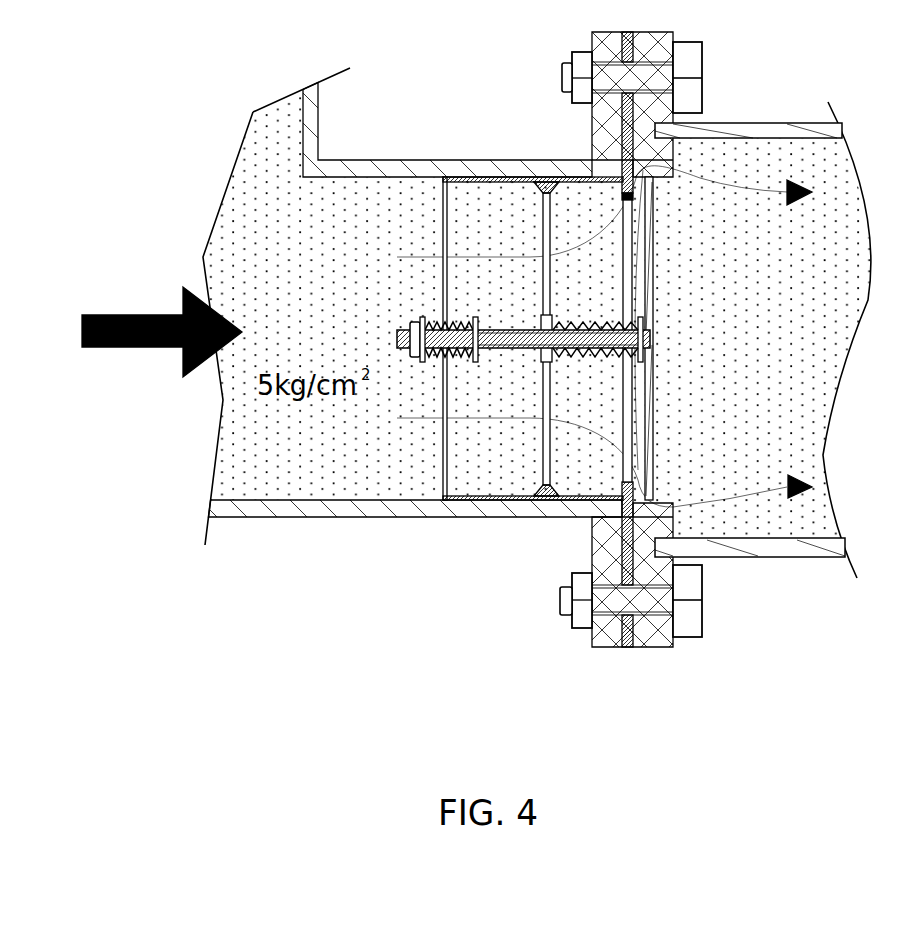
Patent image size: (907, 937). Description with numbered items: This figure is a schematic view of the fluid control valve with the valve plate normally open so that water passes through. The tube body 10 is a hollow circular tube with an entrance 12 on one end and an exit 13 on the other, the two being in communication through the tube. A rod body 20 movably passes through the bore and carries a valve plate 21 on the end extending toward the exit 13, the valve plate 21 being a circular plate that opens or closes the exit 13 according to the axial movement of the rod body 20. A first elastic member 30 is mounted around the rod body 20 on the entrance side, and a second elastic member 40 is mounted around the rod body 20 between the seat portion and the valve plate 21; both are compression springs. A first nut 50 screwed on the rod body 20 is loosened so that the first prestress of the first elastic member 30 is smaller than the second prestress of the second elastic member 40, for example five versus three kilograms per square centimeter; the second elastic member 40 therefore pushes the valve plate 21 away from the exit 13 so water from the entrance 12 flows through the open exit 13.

The tube body 10 is at (518, 500).
The entrance 12 is at (443, 212).
The exit 13 is at (603, 208).
The rod body 20 is at (490, 340).
The valve plate 21 is at (652, 223).
The first elastic member 30 is at (453, 327).
The second elastic member 40 is at (567, 325).
The first nut 50 is at (415, 353).